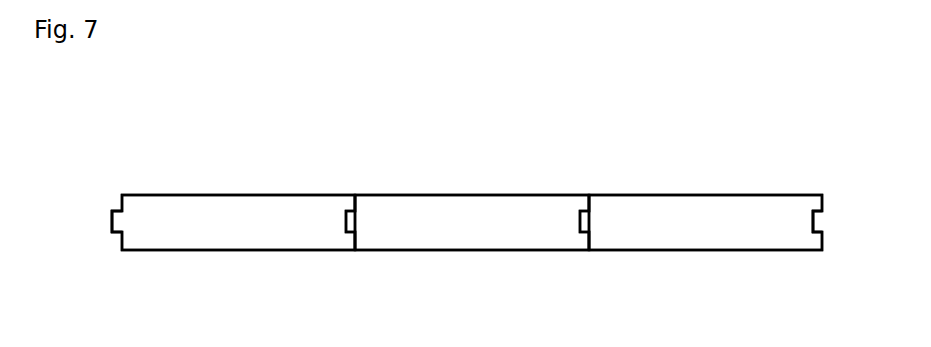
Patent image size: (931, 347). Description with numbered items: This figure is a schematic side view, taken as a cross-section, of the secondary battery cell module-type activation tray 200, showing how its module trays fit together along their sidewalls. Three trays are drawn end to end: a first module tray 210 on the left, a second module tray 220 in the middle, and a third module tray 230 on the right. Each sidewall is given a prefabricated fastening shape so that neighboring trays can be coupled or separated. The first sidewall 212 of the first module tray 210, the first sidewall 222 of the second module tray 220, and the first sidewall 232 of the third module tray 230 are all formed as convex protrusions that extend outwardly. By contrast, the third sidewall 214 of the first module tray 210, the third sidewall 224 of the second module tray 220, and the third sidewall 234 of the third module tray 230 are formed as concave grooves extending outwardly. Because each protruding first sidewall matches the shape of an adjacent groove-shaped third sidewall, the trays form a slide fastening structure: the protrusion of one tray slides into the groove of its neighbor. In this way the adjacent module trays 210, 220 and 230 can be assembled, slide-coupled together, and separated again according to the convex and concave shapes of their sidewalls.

The secondary battery cell module-type activation tray 200 is at (124, 125).
The first module tray 210 is at (233, 193).
The second module tray 220 is at (472, 193).
The third module tray 230 is at (705, 193).
The first sidewall of the first module tray 212 is at (128, 251).
The third sidewall of the first module tray 214 is at (351, 243).
The first sidewall of the second module tray 222 is at (351, 256).
The third sidewall of the second module tray 224 is at (573, 256).
The first sidewall of the third module tray 232 is at (592, 243).
The third sidewall of the third module tray 234 is at (815, 251).